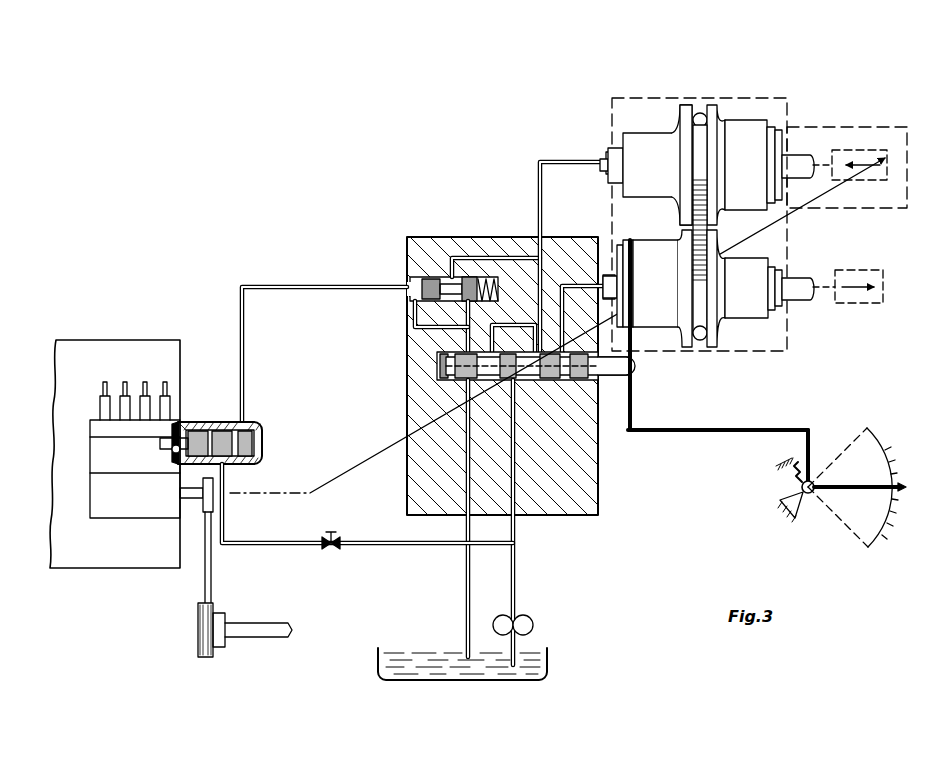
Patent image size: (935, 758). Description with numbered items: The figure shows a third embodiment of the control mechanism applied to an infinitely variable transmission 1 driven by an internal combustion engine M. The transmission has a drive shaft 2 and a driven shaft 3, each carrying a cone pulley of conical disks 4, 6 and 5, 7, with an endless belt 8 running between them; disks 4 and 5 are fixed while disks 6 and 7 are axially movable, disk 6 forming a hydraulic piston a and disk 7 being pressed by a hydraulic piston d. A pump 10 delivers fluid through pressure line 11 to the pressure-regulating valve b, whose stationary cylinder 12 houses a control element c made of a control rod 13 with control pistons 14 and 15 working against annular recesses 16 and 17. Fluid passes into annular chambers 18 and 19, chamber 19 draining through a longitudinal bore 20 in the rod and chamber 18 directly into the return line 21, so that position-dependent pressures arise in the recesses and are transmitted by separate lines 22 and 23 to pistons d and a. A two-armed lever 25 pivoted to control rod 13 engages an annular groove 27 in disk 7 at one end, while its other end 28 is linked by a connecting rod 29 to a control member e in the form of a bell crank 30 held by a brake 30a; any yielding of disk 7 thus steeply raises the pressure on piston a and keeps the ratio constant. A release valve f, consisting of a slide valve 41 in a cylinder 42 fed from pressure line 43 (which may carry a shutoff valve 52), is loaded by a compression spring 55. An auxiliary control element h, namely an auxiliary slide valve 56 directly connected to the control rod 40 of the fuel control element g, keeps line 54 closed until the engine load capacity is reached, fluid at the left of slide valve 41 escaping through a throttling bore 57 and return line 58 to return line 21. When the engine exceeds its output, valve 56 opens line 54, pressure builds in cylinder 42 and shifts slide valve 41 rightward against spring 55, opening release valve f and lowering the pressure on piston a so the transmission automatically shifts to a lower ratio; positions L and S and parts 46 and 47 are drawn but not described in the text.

The infinitely variable transmission 1 is at (776, 96).
The drive shaft 2 is at (800, 155).
The driven shaft 3 is at (800, 283).
The conical disk 4 is at (690, 108).
The conical disk 5 is at (712, 350).
The axially movable conical disk 6 is at (713, 106).
The axially movable conical disk 7 is at (686, 350).
The endless belt 8 is at (700, 112).
The pump 10 is at (522, 618).
The pressure line 11 is at (518, 570).
The stationary cylinder 12 is at (588, 382).
The control rod 13 is at (630, 362).
The control piston 14 is at (498, 382).
The control piston 15 is at (520, 364).
The annular recess 16 is at (490, 350).
The annular recess 17 is at (548, 350).
The annular chamber 18 is at (446, 384).
The annular chamber 19 is at (552, 358).
The longitudinal bore 20 is at (522, 382).
The return line 21 is at (462, 456).
The pressure line 22 is at (570, 283).
The pressure line 23 is at (541, 200).
The two-armed lever 25 is at (634, 406).
The annular groove 27 is at (630, 242).
The lever end 28 is at (630, 460).
The connecting rod 29 is at (734, 432).
The bell crank 30 is at (812, 442).
The brake 30a is at (795, 487).
The control rod 40 is at (176, 452).
The slide valve 41 is at (452, 292).
The cylinder 42 is at (418, 243).
The pressure line 43 is at (514, 258).
The piston land 46 is at (468, 276).
The duct 47 is at (472, 320).
The shutoff valve 52 is at (331, 556).
The line 54 is at (244, 326).
The compression spring 55 is at (487, 290).
The auxiliary slide valve 56 is at (222, 432).
The throttling bore 57 is at (412, 318).
The return line 58 is at (410, 345).
The hydraulic piston a is at (748, 128).
The pressure-regulating valve b is at (548, 384).
The control element c is at (616, 378).
The hydraulic piston d is at (662, 312).
The control member e is at (858, 486).
The release valve f is at (428, 250).
The control element g is at (180, 430).
The auxiliary control element h is at (250, 424).
The idle position L is at (853, 480).
The full-load position S is at (846, 525).
The internal combustion engine M is at (171, 498).